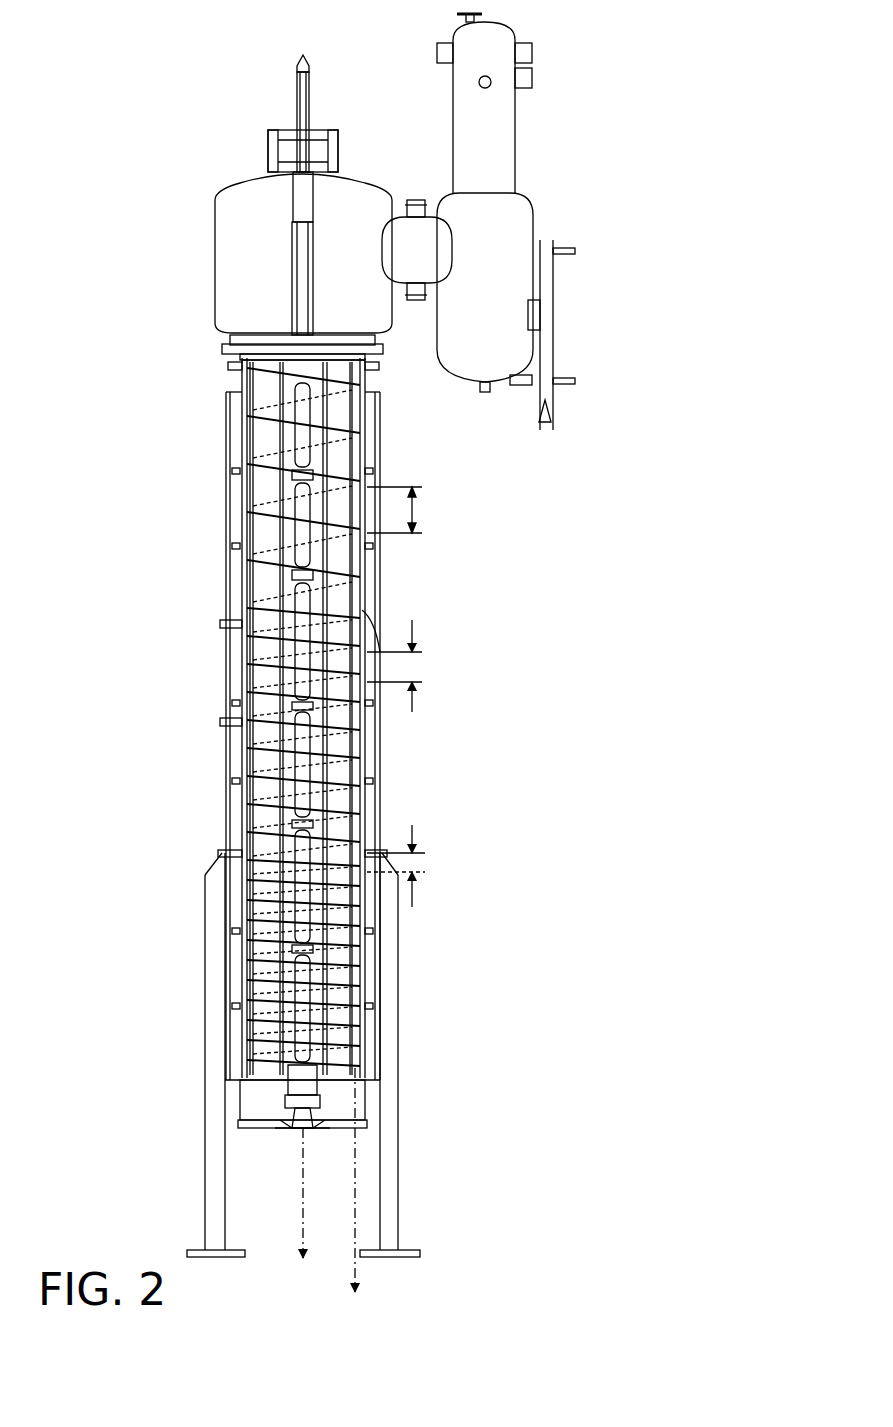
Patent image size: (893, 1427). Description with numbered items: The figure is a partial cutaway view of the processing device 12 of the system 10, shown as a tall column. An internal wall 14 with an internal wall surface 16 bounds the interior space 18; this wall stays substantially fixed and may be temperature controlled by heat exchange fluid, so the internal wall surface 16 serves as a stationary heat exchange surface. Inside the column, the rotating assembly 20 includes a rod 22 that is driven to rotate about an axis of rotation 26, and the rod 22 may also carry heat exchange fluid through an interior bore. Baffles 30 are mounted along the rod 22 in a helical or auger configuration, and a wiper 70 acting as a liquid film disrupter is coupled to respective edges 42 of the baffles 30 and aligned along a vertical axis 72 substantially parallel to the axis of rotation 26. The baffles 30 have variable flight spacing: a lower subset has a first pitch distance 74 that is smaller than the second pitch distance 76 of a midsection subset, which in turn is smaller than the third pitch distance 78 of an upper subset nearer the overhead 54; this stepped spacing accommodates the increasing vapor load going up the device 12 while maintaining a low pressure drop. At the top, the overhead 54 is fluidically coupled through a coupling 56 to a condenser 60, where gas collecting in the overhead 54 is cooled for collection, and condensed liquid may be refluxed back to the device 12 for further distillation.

The system 10 is at (192, 108).
The processing device 12 is at (187, 303).
The internal wall 14 is at (243, 580).
The internal wall surface 16 is at (332, 422).
The interior space 18 is at (270, 542).
The rotating assembly 20 is at (270, 440).
The rod 22 is at (303, 1005).
The axis of rotation 26 is at (302, 1222).
The baffles 30 is at (345, 648).
The edges 42 is at (365, 690).
The overhead 54 is at (227, 225).
The coupling 56 is at (405, 228).
The condenser 60 is at (528, 230).
The wiper 70 is at (362, 598).
The vertical axis 72 is at (355, 1170).
The first pitch distance 74 is at (412, 830).
The second pitch distance 76 is at (412, 712).
The third pitch distance 78 is at (415, 512).